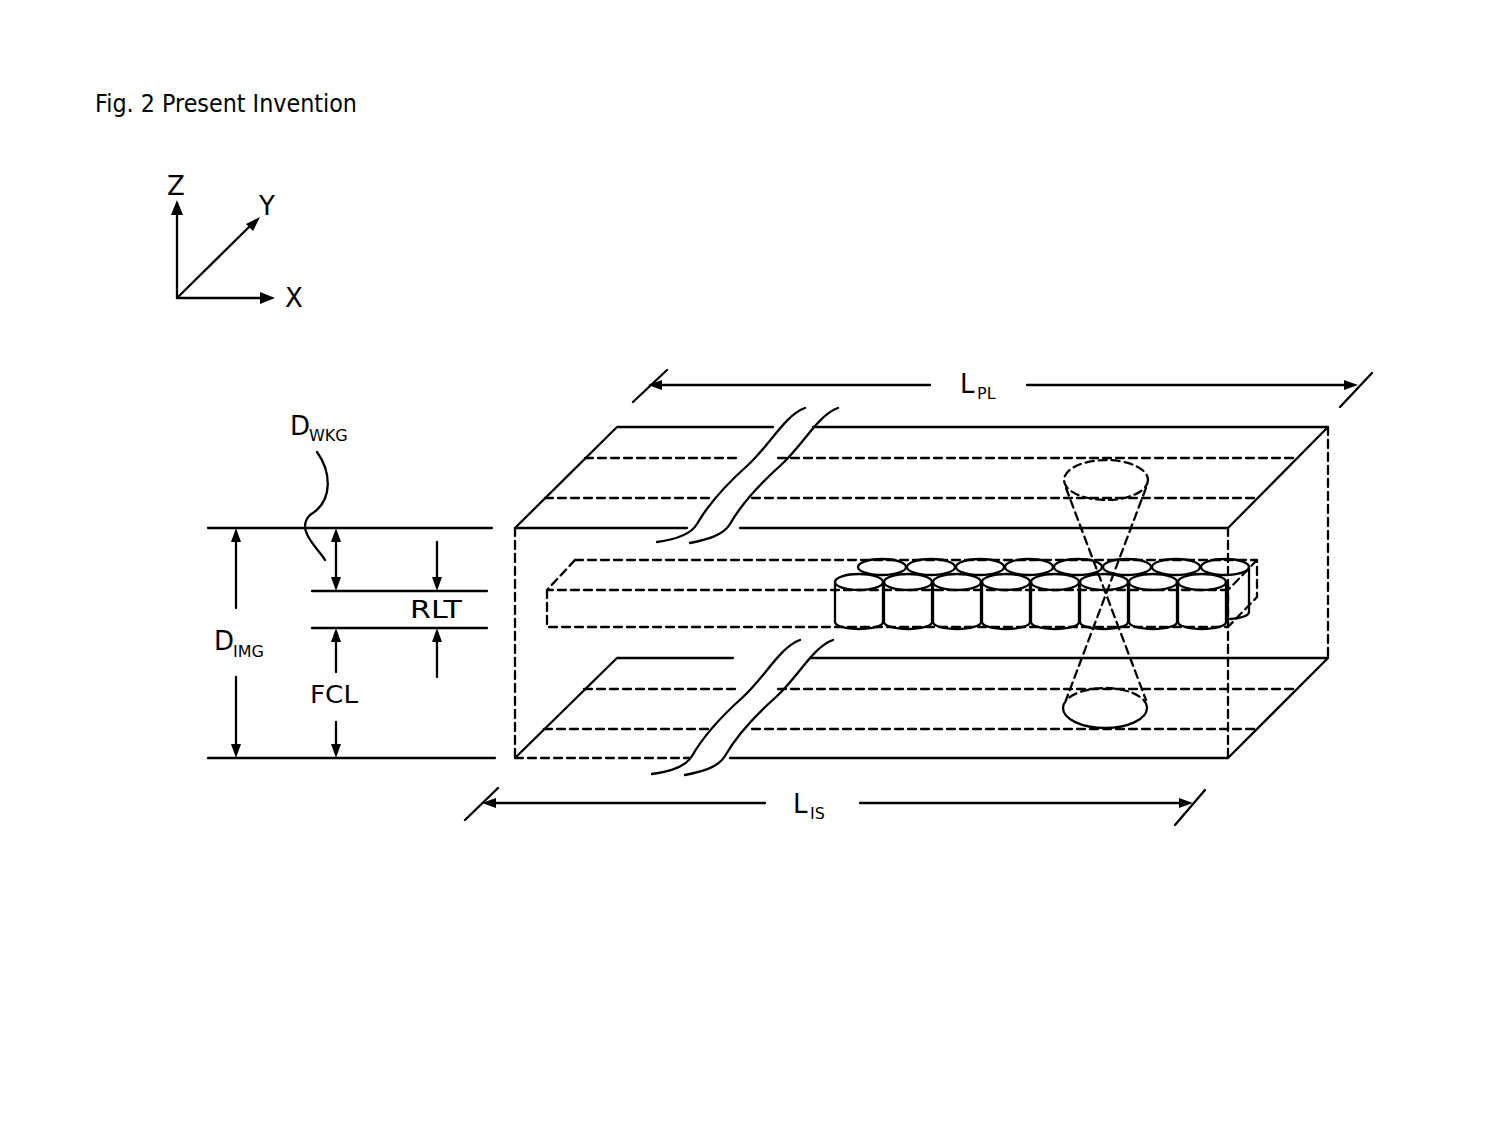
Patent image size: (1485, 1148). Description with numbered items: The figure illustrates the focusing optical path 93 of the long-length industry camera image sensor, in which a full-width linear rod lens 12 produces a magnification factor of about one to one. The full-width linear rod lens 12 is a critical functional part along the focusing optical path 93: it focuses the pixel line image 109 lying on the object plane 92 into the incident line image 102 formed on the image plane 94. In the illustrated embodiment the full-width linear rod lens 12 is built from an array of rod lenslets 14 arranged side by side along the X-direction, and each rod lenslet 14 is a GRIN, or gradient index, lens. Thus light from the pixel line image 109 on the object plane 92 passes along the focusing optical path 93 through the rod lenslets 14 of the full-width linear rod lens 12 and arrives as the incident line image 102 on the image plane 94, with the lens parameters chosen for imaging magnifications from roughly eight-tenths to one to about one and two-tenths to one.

The object plane 92 is at (620, 440).
The image plane 94 is at (628, 747).
The incident line image 102 is at (935, 710).
The full-width linear rod lens 12 is at (578, 575).
The rod lenslet 14 is at (1257, 562).
The pixel line image 109 is at (1032, 473).
The focusing optical path 93 is at (1138, 513).